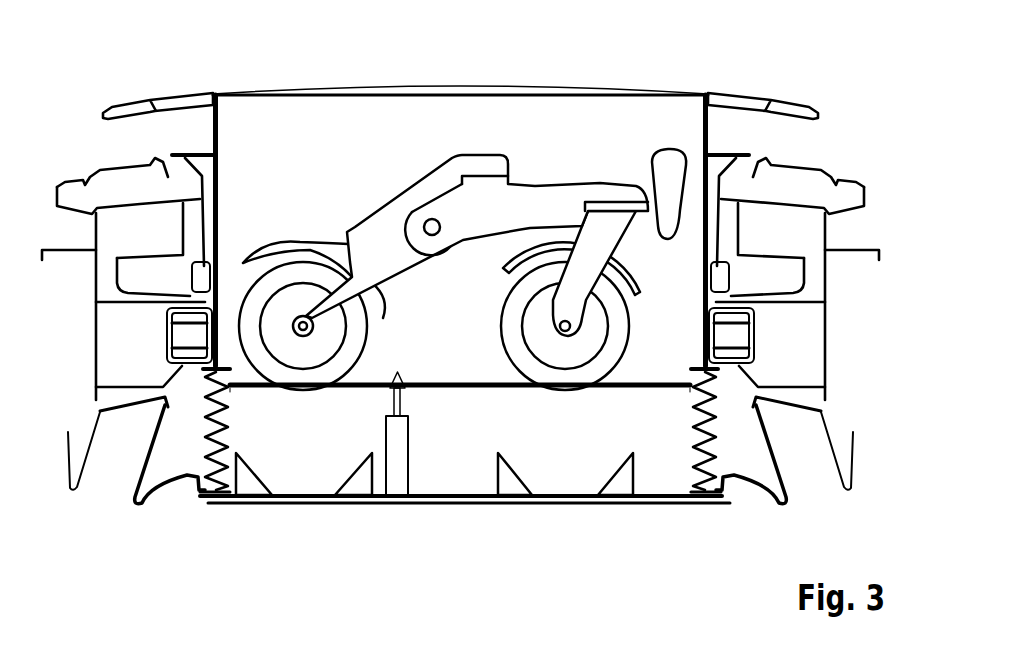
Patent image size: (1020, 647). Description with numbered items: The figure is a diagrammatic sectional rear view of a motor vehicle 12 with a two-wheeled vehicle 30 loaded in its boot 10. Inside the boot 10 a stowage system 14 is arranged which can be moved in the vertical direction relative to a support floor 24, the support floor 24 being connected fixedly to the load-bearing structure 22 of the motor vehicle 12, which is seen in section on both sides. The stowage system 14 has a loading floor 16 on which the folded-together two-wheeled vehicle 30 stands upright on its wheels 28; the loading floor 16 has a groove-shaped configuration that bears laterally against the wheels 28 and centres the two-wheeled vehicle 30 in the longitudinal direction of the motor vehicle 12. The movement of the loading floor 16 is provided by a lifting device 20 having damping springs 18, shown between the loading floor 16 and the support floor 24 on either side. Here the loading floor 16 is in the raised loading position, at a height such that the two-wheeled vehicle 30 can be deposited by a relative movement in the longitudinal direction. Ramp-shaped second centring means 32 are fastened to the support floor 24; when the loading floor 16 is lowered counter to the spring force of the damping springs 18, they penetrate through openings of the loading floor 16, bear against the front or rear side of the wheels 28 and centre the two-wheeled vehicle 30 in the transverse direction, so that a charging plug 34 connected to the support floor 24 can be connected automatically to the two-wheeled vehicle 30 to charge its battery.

The boot 10 is at (322, 120).
The motor vehicle 12 is at (749, 71).
The stowage system 14 is at (467, 416).
The loading floor 16 is at (447, 384).
The damping springs 18 is at (203, 437).
The lifting device 20 is at (691, 456).
The load-bearing structure 22 is at (170, 334).
The support floor 24 is at (437, 506).
The wheels 28 is at (310, 372).
The two-wheeled vehicle 30 is at (462, 298).
The second centring means 32 is at (252, 488).
The charging plug 34 is at (398, 490).